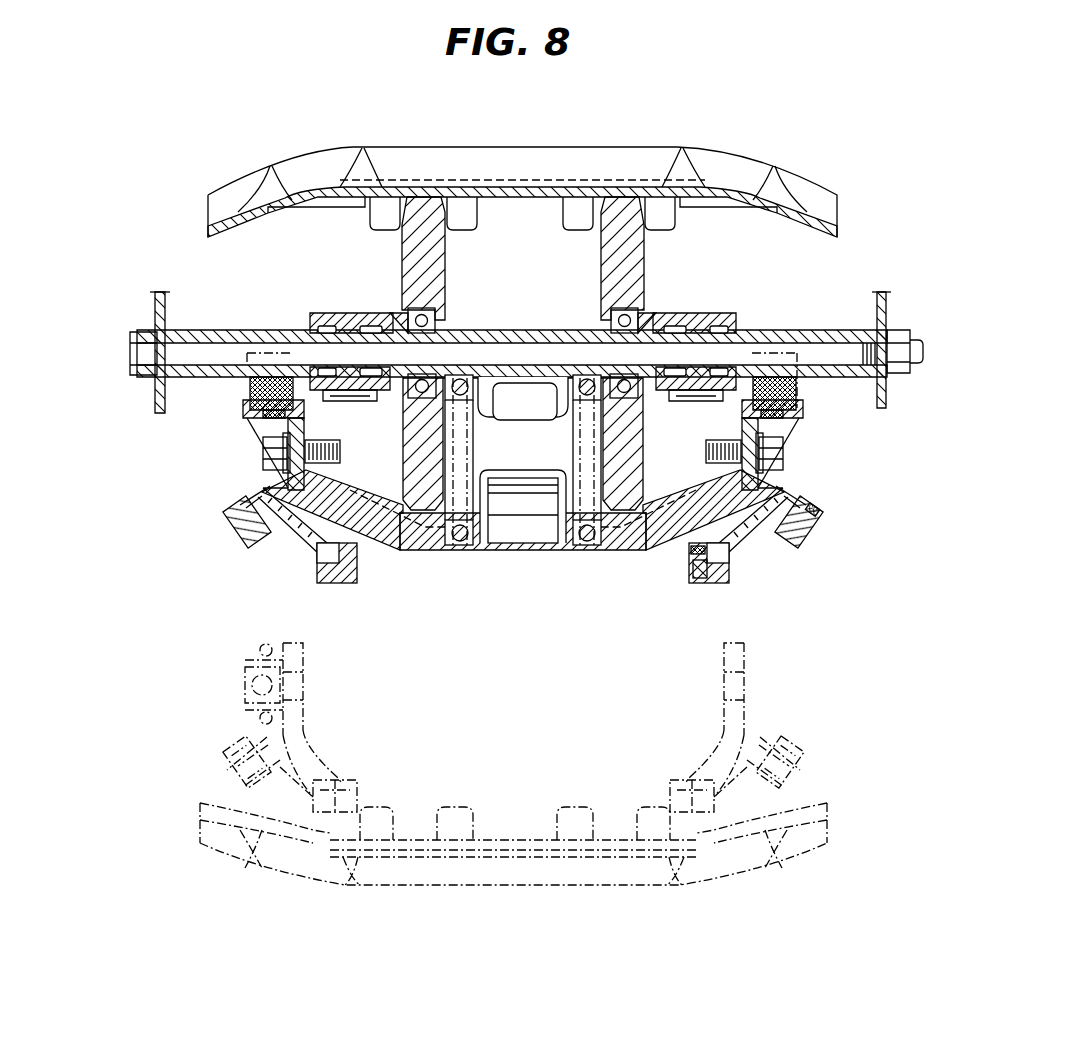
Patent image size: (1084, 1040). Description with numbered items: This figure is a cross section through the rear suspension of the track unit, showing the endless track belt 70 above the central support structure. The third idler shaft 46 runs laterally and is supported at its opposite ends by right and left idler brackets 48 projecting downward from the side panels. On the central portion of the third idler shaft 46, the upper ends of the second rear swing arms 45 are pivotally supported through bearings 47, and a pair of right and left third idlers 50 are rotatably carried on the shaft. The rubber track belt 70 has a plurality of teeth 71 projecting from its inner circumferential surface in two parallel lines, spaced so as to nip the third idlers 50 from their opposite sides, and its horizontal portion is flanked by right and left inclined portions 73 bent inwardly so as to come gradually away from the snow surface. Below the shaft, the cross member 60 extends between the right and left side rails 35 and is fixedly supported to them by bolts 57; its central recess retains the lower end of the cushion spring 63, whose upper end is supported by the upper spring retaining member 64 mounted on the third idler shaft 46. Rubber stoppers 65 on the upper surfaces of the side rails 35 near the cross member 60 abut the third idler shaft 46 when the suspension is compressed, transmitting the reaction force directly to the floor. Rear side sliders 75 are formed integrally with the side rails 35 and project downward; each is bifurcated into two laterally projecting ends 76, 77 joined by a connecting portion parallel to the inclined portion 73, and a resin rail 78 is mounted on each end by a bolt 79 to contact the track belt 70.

The side rail 35 is at (263, 430).
The second rear swing arm 45 is at (325, 312).
The third idler shaft 46 is at (183, 357).
The bearing 47 is at (440, 318).
The idler bracket 48 is at (153, 312).
The third idler 50 is at (402, 270).
The bolt 57 is at (267, 468).
The cross member 60 is at (403, 552).
The cushion spring 63 is at (472, 445).
The upper spring retaining member 64 is at (533, 413).
The rubber stopper 65 is at (248, 383).
The endless track belt 70 is at (507, 157).
The tooth 71 is at (461, 204).
The inclined portion 73 is at (737, 193).
The rear side slider 75 is at (298, 523).
The laterally projecting end 76 is at (692, 567).
The laterally projecting end 77 is at (808, 520).
The resin rail 78 is at (803, 540).
The bolt 79 is at (690, 550).